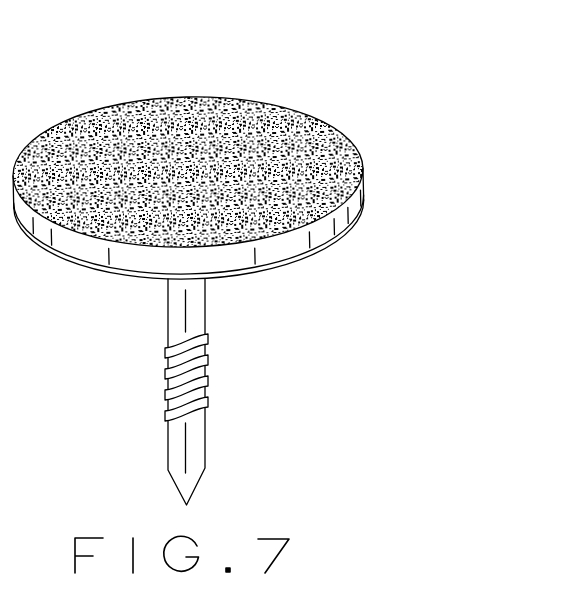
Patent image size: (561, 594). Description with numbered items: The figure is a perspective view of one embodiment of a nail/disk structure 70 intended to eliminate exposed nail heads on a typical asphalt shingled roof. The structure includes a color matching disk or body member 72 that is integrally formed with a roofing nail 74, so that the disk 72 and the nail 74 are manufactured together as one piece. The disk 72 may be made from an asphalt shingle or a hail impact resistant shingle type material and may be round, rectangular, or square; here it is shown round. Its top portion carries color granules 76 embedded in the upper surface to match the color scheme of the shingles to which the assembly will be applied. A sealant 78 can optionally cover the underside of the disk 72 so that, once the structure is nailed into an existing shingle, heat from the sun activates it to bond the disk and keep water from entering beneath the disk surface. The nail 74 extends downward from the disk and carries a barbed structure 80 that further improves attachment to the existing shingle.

The nail/disk structure 70 is at (358, 98).
The color matching disk 72 is at (362, 210).
The roofing nail 74 is at (168, 328).
The color granules 76 is at (147, 130).
The sealant 78 is at (295, 268).
The barbed structure 80 is at (166, 371).